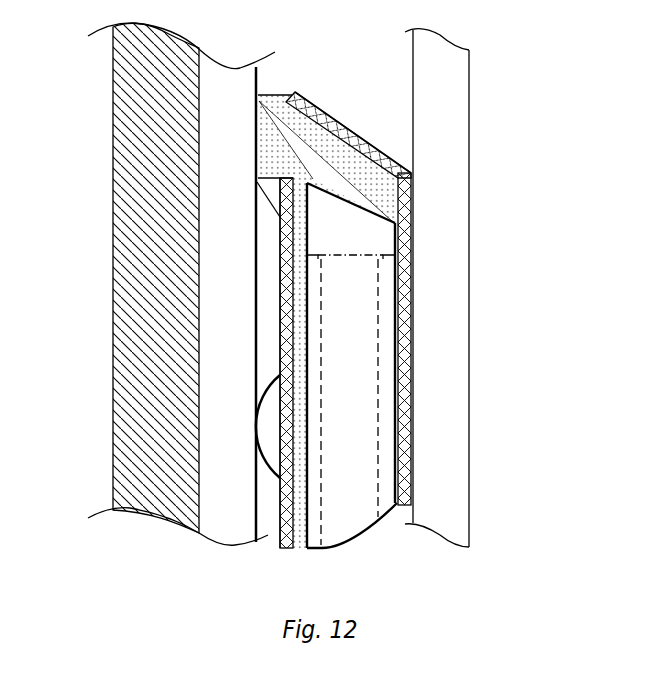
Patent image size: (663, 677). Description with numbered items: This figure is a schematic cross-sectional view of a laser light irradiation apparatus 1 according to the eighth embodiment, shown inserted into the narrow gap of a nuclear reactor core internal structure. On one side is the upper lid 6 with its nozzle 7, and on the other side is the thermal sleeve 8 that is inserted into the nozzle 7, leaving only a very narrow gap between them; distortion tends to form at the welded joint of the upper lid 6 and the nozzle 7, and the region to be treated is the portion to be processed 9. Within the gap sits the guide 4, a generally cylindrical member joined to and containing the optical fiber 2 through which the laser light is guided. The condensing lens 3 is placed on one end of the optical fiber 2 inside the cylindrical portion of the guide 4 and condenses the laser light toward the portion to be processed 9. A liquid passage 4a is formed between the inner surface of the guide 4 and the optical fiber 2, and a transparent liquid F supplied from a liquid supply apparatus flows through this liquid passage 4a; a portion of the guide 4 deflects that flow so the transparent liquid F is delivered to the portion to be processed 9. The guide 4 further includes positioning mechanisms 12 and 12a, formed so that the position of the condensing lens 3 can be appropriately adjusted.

The laser light irradiation apparatus 1 is at (388, 280).
The optical fiber 2 is at (350, 503).
The condensing lens 3 is at (362, 243).
The guide 4 is at (278, 358).
The liquid passage 4a is at (278, 312).
The upper lid 6 is at (148, 203).
The nozzle 7 is at (207, 243).
The thermal sleeve 8 is at (437, 157).
The portion to be processed 9 is at (256, 100).
The positioning mechanism 12 is at (268, 423).
The positioning mechanism 12a is at (268, 187).
The transparent liquid F is at (318, 108).